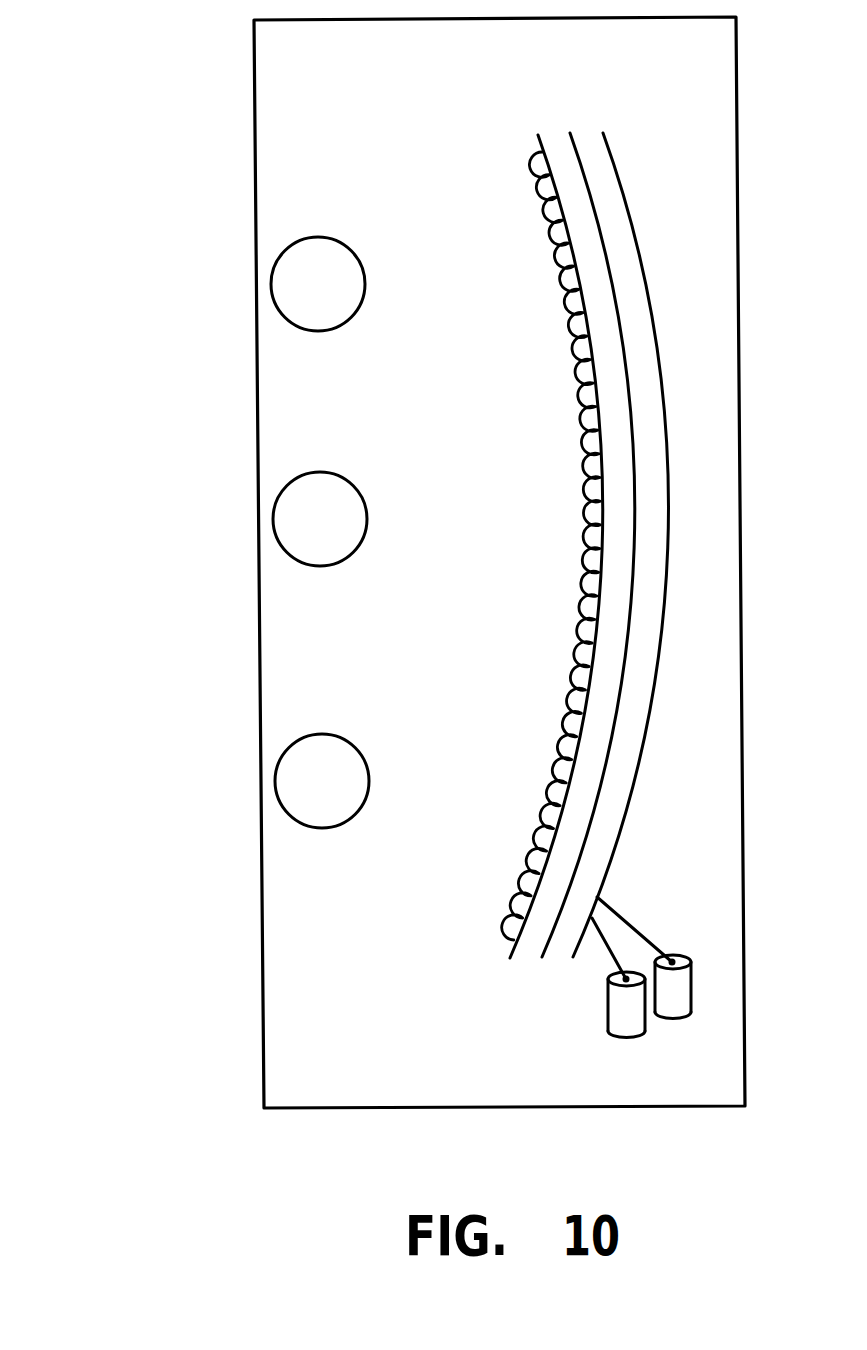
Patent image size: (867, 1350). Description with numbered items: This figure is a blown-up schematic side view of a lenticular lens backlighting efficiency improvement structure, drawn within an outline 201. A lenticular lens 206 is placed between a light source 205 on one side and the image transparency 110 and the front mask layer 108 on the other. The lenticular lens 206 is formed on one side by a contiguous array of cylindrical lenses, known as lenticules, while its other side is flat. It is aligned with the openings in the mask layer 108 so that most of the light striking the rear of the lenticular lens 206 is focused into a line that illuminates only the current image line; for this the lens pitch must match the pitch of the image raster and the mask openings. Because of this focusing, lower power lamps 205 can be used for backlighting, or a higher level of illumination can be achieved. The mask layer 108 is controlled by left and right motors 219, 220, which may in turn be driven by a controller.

The housing 201 is at (240, 146).
The light source 205 is at (280, 742).
The lenticular lens 206 is at (504, 938).
The image transparency 110 is at (525, 962).
The front mask layer 108 is at (559, 960).
The left motor 219 is at (633, 1052).
The right motor 220 is at (687, 1030).